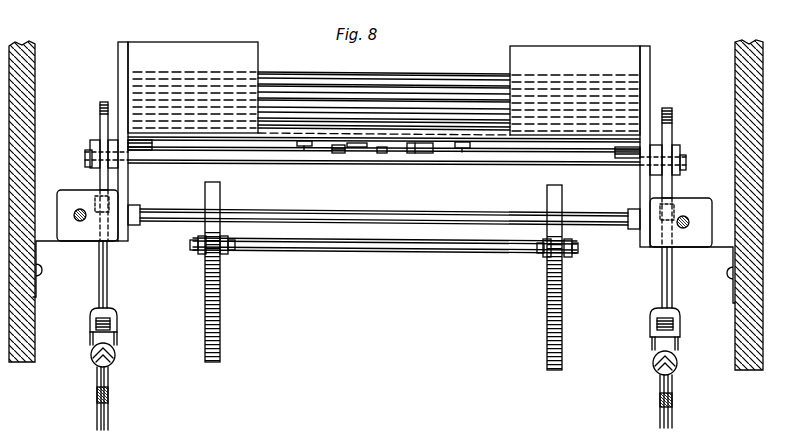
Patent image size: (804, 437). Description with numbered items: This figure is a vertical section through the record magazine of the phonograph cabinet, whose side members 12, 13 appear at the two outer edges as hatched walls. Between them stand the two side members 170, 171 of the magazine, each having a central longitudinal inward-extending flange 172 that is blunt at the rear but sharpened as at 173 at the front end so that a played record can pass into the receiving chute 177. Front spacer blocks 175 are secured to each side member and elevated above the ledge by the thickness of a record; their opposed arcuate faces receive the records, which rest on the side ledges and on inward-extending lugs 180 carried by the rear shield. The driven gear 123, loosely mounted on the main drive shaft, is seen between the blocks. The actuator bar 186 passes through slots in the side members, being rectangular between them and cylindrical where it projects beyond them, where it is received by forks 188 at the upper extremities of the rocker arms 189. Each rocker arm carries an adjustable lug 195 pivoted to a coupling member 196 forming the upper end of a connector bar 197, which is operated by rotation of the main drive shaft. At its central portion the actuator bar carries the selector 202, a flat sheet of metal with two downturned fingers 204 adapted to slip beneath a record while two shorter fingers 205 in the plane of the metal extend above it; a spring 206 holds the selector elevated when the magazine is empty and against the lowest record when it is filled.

The side member 12 is at (748, 40).
The side member 13 is at (20, 41).
The driven gear 123 is at (349, 90).
The side member of magazine 170 is at (650, 58).
The side member of magazine 171 is at (118, 55).
The flange 172 is at (155, 150).
The sharpened front end of flange 173 is at (140, 150).
The front spacer block 175 is at (205, 50).
The receiving chute 177 is at (229, 282).
The lug 180 is at (299, 147).
The actuator bar 186 is at (686, 160).
The fork 188 is at (101, 105).
The rocker arm 189 is at (107, 287).
The adjustable lug 195 is at (118, 318).
The coupling member 196 is at (116, 345).
The connector bar 197 is at (108, 381).
The selector 202 is at (367, 148).
The downturned finger 204 is at (340, 153).
The finger 205 is at (410, 153).
The spring 206 is at (385, 155).